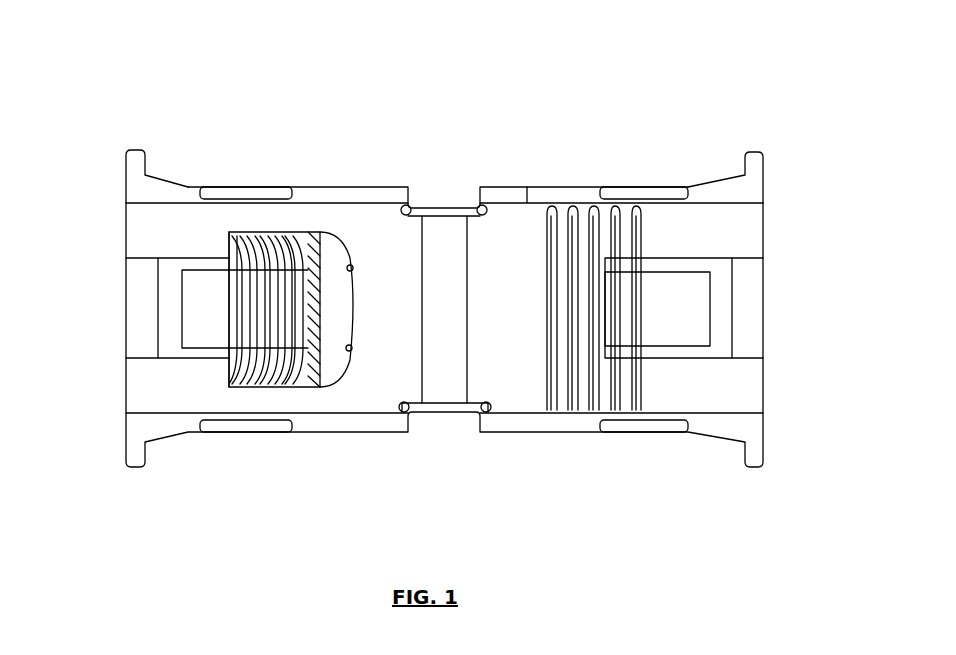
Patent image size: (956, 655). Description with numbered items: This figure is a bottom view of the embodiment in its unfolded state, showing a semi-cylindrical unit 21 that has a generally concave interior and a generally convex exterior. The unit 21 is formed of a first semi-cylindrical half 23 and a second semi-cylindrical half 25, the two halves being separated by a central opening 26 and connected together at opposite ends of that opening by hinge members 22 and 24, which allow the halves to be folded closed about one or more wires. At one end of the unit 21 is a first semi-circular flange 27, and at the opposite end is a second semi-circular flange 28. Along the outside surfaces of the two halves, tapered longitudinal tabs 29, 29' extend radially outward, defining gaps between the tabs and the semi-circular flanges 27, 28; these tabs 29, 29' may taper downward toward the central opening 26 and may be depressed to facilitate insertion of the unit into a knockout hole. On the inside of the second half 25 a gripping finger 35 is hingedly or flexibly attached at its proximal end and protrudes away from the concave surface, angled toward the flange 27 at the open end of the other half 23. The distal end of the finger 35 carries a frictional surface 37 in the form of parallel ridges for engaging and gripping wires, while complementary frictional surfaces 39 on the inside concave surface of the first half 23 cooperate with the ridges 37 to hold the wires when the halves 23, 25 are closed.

The semi-cylindrical unit 21 is at (580, 654).
The hinge member 22 is at (453, 197).
The first semi-cylindrical half 23 is at (558, 427).
The hinge member 24 is at (450, 425).
The second semi-cylindrical half 25 is at (330, 425).
The central opening 26 is at (445, 298).
The first semi-circular flange 27 is at (753, 167).
The second semi-circular flange 28 is at (135, 167).
The tapered longitudinal tab 29 is at (741, 307).
The tapered longitudinal tab 29' is at (124, 293).
The gripping finger 35 is at (337, 262).
The frictional surface 37 is at (272, 253).
The complementary frictional surface 39 is at (553, 243).